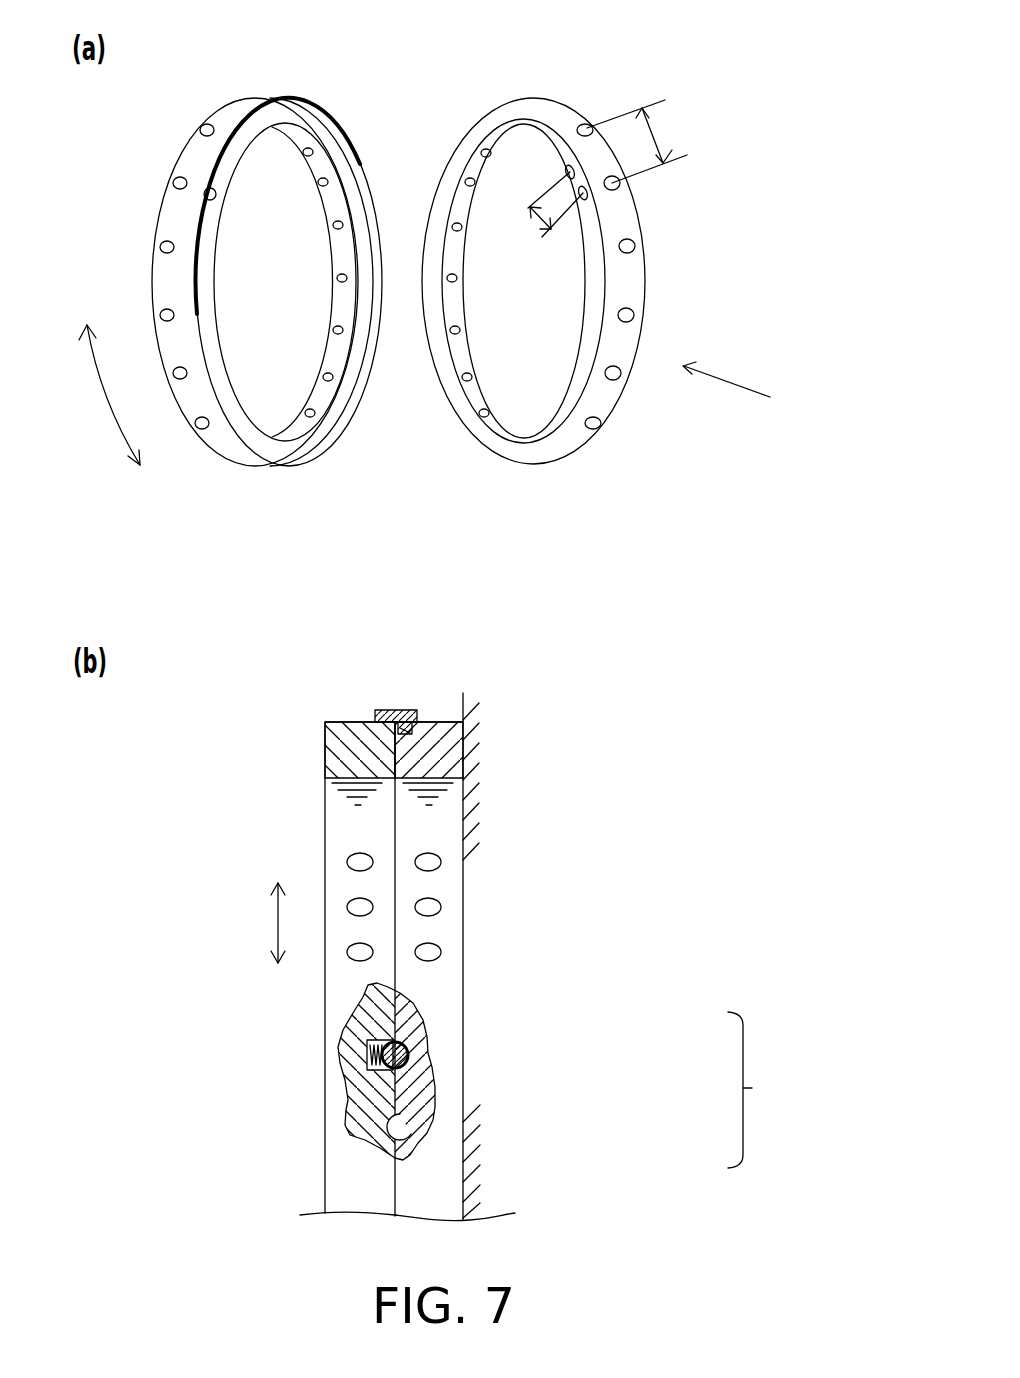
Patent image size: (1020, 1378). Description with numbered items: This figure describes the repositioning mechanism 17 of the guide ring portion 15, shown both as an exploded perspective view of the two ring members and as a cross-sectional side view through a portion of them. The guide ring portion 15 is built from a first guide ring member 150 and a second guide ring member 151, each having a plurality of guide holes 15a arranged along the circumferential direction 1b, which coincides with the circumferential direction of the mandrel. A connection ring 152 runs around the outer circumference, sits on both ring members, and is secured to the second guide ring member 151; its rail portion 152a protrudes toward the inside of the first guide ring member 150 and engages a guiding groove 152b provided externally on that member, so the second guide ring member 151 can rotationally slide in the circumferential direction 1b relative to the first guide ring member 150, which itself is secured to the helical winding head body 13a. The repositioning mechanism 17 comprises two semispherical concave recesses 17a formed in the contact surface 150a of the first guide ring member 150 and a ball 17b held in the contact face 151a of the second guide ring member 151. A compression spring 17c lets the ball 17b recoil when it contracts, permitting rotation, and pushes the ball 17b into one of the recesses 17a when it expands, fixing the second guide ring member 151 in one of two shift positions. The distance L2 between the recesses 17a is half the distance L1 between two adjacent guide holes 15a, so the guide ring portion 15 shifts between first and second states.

The guide ring portion 15 is at (746, 393).
The first guide ring member 150 is at (580, 456).
The contact surface 150a is at (595, 280).
The second guide ring member 151 is at (222, 447).
The contact face 151a is at (203, 290).
The connection ring 152 is at (271, 97).
The rail portion 152a is at (412, 731).
The guiding groove 152b is at (403, 734).
The guide holes 15a is at (585, 125).
The repositioning mechanism 17 is at (737, 1090).
The semispherical concave recesses 17a is at (565, 170).
The ball 17b is at (215, 196).
The compression spring 17c is at (347, 1106).
The helical winding head body 13a is at (463, 705).
The circumferential direction 1b is at (100, 398).
The distance between two adjacent guide holes L1 is at (655, 137).
The distance between the recesses L2 is at (533, 222).